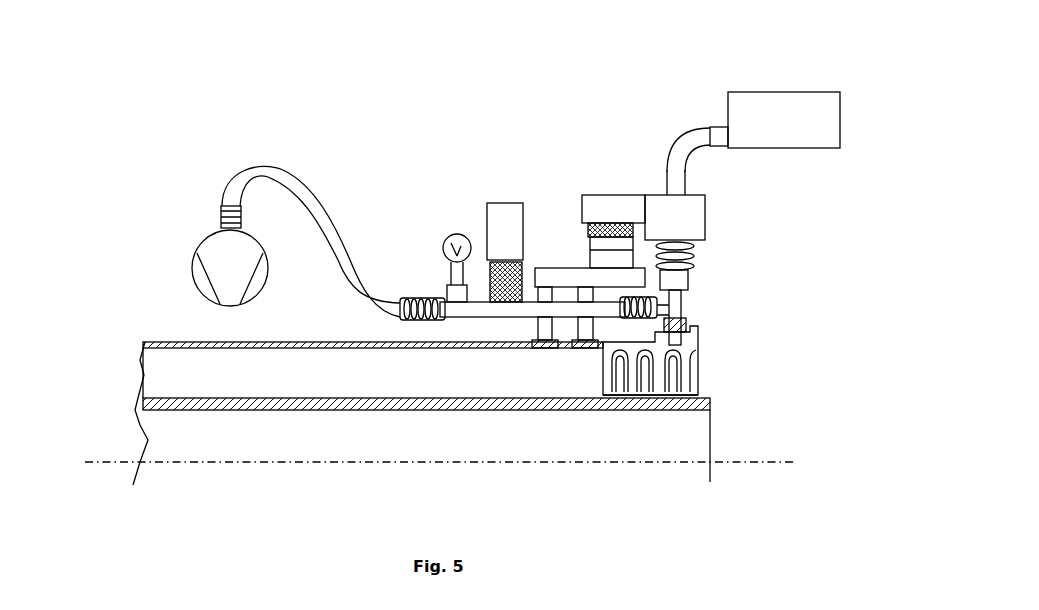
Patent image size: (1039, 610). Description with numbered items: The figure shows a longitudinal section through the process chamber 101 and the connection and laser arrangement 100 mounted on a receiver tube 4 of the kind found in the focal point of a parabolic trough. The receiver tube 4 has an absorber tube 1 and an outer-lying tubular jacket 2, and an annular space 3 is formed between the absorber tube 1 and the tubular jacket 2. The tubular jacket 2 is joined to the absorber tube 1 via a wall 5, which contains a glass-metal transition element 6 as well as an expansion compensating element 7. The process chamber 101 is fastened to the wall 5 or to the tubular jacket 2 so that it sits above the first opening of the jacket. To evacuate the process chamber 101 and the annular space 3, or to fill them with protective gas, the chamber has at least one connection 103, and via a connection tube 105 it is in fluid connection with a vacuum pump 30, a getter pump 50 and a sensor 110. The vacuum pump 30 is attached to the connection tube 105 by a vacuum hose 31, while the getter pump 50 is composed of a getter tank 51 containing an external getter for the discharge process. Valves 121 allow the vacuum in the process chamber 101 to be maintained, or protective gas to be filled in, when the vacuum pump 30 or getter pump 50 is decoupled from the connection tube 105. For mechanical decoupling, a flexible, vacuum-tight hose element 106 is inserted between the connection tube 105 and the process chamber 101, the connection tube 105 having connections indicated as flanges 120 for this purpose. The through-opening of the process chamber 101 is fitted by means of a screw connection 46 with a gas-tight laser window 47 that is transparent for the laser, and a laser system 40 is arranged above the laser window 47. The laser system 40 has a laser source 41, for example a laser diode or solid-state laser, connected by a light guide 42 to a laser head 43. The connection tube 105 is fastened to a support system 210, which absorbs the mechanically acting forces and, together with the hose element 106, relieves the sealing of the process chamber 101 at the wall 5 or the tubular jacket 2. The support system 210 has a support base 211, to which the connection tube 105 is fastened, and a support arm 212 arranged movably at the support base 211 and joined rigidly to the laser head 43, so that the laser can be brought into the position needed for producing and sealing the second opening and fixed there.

The system 100 is at (318, 75).
The absorber tube 1 is at (140, 408).
The tubular jacket 2 is at (145, 342).
The annular space 3 is at (165, 380).
The receiver tube 4 is at (112, 428).
The wall 5 is at (706, 383).
The glass-metal transition element 6 is at (635, 342).
The expansion compensating element 7 is at (668, 367).
The vacuum pump 30 is at (198, 248).
The vacuum hose 31 is at (247, 175).
The laser system 40 is at (848, 122).
The laser source 41 is at (783, 107).
The light guide 42 is at (687, 145).
The laser head 43 is at (717, 200).
The screw connection 46 is at (690, 287).
The laser window 47 is at (686, 277).
The getter pump 50 is at (478, 193).
The getter tank 51 is at (505, 205).
The process chamber 101 is at (685, 303).
The connection 103 is at (673, 312).
The connection tube 105 is at (470, 313).
The hose element 106 is at (627, 318).
The sensor 110 is at (447, 240).
The flanges 120 is at (455, 285).
The valves 121 is at (433, 308).
The support system 210 is at (578, 183).
The support base 211 is at (577, 245).
The support arm 212 is at (610, 197).